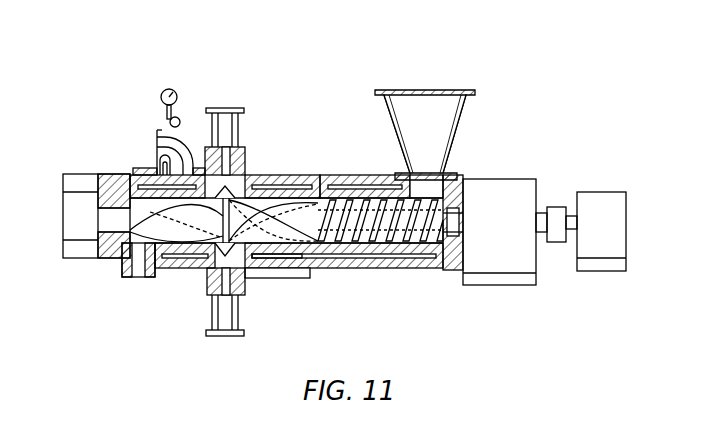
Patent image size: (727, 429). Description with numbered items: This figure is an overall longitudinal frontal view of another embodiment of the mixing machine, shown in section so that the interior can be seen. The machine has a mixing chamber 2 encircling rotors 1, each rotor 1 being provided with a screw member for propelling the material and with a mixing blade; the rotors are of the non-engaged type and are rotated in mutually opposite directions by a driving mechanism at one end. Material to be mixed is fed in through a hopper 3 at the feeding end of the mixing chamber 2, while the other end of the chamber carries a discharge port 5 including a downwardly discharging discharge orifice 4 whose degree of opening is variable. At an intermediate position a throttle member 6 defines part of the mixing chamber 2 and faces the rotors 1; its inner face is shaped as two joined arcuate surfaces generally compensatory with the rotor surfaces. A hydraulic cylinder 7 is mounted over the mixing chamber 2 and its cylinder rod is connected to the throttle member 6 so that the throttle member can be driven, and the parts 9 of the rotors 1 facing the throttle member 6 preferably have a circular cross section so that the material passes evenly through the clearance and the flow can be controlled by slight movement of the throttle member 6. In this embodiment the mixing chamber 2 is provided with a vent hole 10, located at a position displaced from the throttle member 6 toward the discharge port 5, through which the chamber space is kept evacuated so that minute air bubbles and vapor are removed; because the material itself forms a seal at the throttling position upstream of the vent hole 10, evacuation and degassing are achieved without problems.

The rotor 1 is at (290, 243).
The mixing chamber 2 is at (346, 172).
The hopper 3 is at (434, 91).
The discharge orifice 4 is at (122, 266).
The discharge port 5 is at (139, 268).
The throttle member 6 is at (241, 178).
The hydraulic cylinder 7 is at (242, 127).
The rotor part facing throttle member 9 is at (247, 266).
The vent hole 10 is at (156, 146).